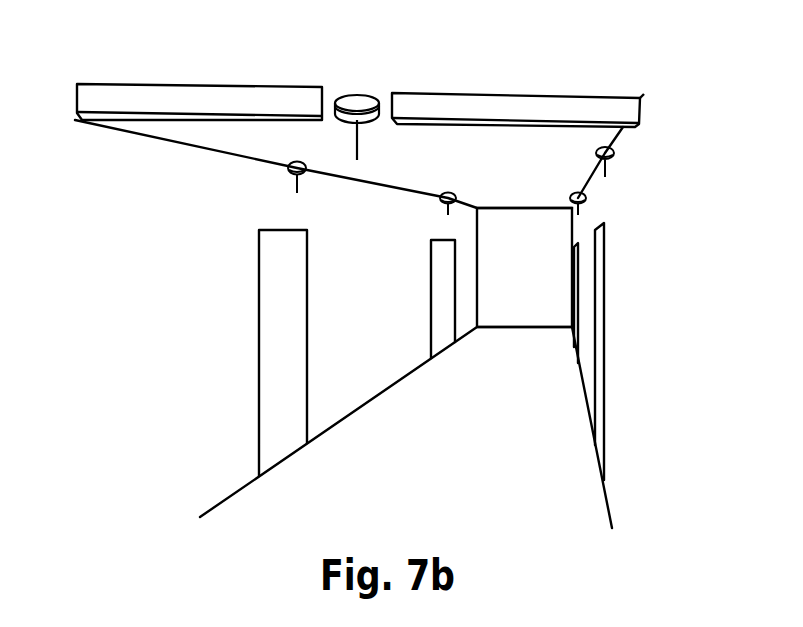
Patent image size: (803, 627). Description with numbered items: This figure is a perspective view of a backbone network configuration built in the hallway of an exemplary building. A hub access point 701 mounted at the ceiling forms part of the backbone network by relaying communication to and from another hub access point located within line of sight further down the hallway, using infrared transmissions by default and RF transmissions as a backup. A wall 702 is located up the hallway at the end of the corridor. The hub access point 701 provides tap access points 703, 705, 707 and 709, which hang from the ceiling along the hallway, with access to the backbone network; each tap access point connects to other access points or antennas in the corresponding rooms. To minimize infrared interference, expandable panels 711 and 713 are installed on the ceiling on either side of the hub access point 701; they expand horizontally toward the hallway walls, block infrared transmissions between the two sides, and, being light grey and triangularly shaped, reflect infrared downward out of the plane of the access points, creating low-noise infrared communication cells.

The hub access point 701 is at (352, 92).
The wall 702 is at (547, 318).
The tap access point 703 is at (614, 151).
The tap access point 705 is at (440, 200).
The tap access point 707 is at (290, 163).
The tap access point 709 is at (587, 198).
The expandable panel 711 is at (160, 100).
The expandable panel 713 is at (528, 110).